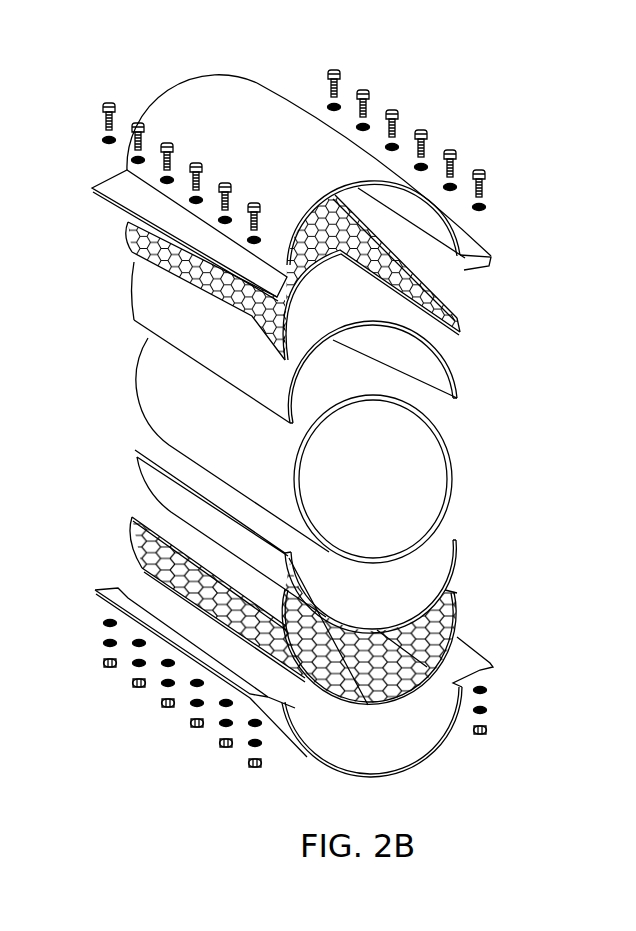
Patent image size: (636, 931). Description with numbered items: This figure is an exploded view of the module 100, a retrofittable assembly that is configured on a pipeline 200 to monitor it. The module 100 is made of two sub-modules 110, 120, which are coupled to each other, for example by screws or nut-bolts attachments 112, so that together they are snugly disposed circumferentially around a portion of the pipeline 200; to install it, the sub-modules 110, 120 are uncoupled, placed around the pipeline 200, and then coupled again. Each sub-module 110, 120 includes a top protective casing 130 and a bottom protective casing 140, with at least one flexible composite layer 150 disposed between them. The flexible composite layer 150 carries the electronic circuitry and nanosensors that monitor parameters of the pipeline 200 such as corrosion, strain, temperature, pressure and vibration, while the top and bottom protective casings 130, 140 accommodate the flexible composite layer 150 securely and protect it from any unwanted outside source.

The module 100 is at (523, 79).
The sub-module 110 is at (544, 278).
The nut-bolts attachments 112 is at (374, 90).
The sub-module 120 is at (501, 631).
The top protective casing 130 is at (498, 251).
The bottom protective casing 140 is at (459, 386).
The flexible composite layer 150 is at (463, 323).
The pipeline 200 is at (461, 449).